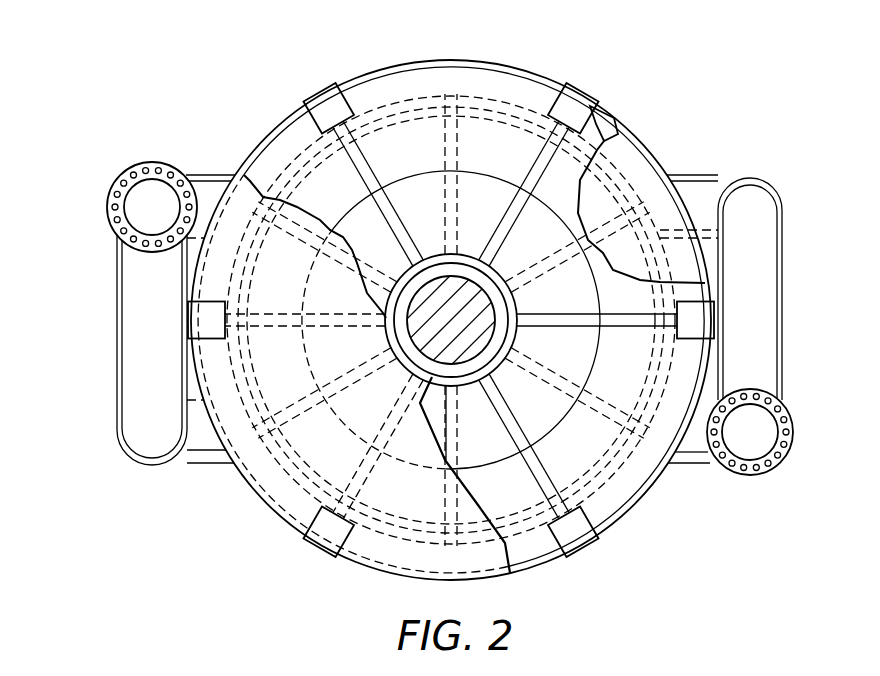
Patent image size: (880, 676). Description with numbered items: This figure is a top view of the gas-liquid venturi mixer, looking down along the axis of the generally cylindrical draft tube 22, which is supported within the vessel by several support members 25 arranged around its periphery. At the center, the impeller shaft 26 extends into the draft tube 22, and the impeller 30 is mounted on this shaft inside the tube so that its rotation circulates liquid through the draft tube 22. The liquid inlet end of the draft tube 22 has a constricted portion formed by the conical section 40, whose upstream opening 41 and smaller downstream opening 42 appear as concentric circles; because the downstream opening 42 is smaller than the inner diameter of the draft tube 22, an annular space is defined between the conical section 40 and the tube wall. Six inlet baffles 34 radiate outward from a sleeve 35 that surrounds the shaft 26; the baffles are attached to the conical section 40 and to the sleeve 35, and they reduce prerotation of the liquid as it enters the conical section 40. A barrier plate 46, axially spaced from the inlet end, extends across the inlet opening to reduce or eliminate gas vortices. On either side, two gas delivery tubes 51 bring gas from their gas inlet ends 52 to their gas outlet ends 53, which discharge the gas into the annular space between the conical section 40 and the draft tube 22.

The draft tube 22 is at (620, 163).
The support members 25 is at (317, 103).
The impeller shaft 26 is at (517, 297).
The impeller 30 is at (491, 140).
The inlet baffles 34 is at (366, 150).
The sleeve 35 is at (500, 363).
The conical section 40 is at (517, 90).
The upstream opening 41 is at (411, 64).
The downstream opening 42 is at (407, 180).
The barrier plate 46 is at (320, 463).
The gas delivery tubes 51 is at (750, 203).
The gas inlet ends 52 is at (796, 440).
The gas outlet ends 53 is at (657, 193).